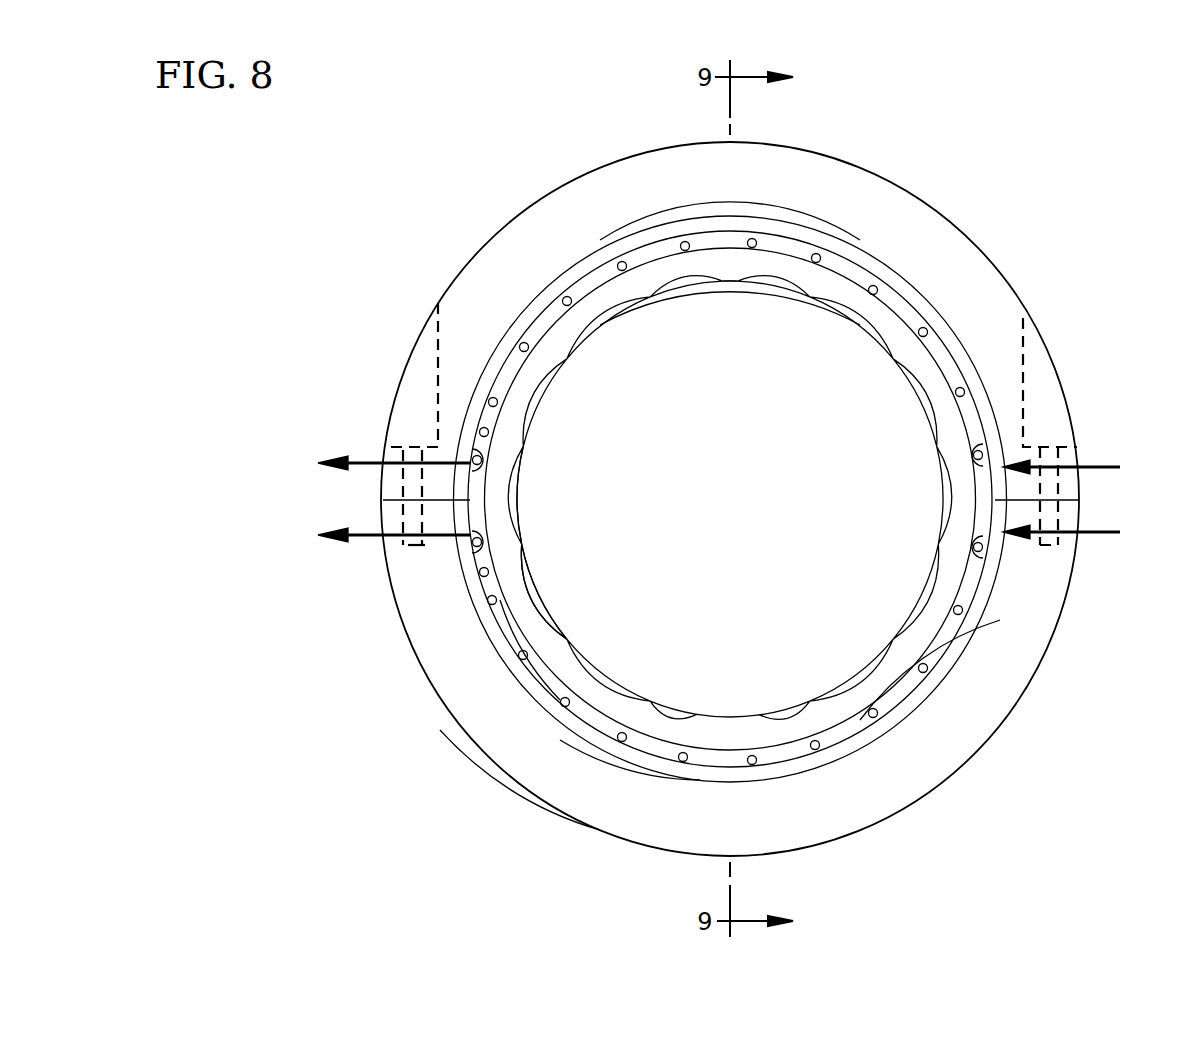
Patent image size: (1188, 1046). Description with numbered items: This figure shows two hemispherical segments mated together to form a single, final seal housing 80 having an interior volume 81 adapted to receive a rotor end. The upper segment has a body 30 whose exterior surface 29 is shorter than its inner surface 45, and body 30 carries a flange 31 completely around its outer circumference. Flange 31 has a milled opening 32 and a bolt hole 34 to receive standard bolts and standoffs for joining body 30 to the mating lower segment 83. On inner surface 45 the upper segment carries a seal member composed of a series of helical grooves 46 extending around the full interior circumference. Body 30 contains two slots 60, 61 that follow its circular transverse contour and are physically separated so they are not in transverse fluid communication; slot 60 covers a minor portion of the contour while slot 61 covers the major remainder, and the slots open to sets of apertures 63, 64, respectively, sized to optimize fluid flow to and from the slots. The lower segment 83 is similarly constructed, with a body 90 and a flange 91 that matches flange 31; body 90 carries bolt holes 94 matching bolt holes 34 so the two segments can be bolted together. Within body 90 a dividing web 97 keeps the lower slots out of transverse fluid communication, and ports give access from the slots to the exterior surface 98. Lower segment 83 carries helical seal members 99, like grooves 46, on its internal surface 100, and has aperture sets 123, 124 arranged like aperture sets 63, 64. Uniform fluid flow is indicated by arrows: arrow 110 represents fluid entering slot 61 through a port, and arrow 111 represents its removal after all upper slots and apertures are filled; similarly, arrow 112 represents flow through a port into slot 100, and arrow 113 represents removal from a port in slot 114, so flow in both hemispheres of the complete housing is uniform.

The exterior surface 29 is at (678, 215).
The body 30 is at (519, 170).
The flange 31 is at (503, 265).
The milled opening 32 is at (417, 388).
The bolt hole 34 is at (403, 478).
The inner surface 45 is at (728, 283).
The helical grooves 46 is at (585, 335).
The slot 60 is at (515, 482).
The slot 61 is at (782, 248).
The apertures 63 is at (489, 432).
The apertures 64 is at (817, 255).
The final seal housing 80 is at (982, 172).
The interior volume 81 is at (772, 323).
The lower segment 83 is at (454, 866).
The body 90 is at (893, 723).
The flange 91 is at (528, 753).
The bolt holes 94 is at (420, 570).
The dividing web 97 is at (512, 630).
The exterior surface 98 is at (600, 753).
The helical seal members 99 is at (583, 660).
The internal surface 100 is at (778, 757).
The arrow 110 is at (1106, 462).
The arrow 111 is at (380, 447).
The arrow 112 is at (1107, 534).
The arrow 113 is at (400, 558).
The slot 114 is at (497, 600).
The aperture set 123 is at (489, 572).
The aperture set 124 is at (683, 753).